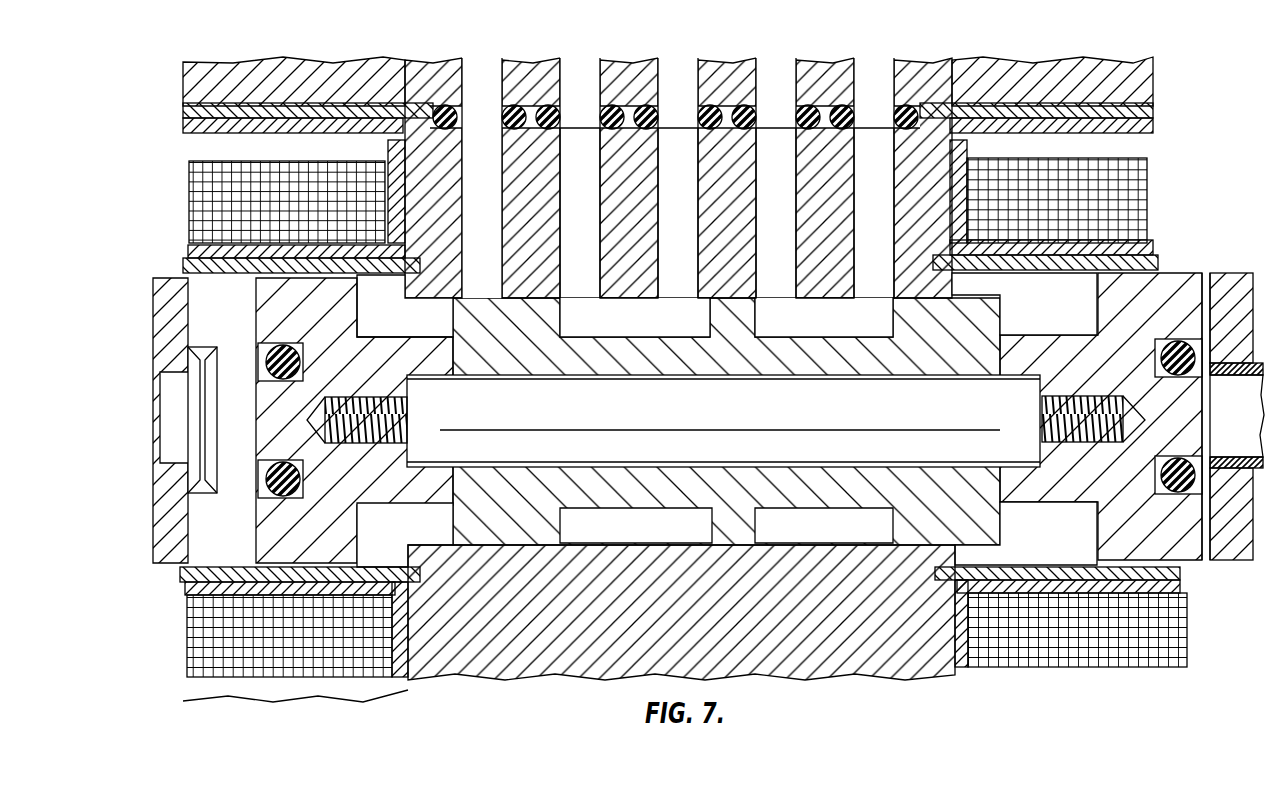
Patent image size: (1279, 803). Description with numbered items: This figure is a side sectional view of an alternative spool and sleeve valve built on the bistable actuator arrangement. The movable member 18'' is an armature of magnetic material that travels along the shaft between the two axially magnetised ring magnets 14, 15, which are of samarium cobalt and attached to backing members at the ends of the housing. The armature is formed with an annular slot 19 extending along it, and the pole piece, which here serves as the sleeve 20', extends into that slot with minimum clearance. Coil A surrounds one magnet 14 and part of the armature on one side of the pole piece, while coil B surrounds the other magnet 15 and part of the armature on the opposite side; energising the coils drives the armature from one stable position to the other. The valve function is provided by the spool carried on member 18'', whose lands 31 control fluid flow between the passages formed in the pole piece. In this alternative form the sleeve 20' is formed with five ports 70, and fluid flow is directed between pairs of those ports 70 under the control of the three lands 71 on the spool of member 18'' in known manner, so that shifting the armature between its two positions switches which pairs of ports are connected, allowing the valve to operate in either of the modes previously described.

The coil A is at (210, 190).
The coil B is at (1125, 187).
The ports 70 is at (496, 208).
The lands 71 is at (581, 290).
The member 18'' is at (333, 420).
The ring magnet 14 is at (178, 538).
The annular slot 19 is at (422, 506).
The lands 31 is at (540, 531).
The sleeve 20' is at (681, 595).
The ring magnet 15 is at (1229, 545).